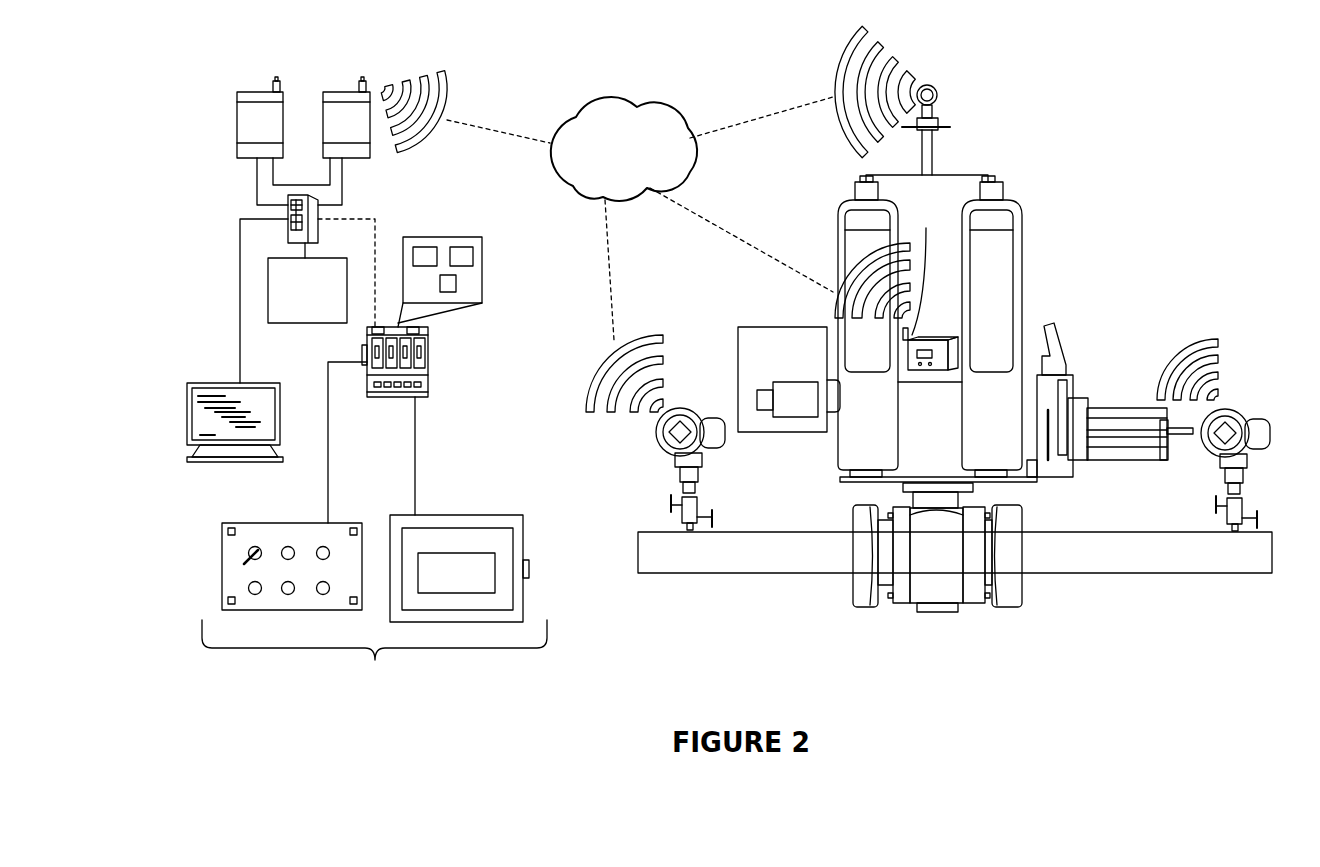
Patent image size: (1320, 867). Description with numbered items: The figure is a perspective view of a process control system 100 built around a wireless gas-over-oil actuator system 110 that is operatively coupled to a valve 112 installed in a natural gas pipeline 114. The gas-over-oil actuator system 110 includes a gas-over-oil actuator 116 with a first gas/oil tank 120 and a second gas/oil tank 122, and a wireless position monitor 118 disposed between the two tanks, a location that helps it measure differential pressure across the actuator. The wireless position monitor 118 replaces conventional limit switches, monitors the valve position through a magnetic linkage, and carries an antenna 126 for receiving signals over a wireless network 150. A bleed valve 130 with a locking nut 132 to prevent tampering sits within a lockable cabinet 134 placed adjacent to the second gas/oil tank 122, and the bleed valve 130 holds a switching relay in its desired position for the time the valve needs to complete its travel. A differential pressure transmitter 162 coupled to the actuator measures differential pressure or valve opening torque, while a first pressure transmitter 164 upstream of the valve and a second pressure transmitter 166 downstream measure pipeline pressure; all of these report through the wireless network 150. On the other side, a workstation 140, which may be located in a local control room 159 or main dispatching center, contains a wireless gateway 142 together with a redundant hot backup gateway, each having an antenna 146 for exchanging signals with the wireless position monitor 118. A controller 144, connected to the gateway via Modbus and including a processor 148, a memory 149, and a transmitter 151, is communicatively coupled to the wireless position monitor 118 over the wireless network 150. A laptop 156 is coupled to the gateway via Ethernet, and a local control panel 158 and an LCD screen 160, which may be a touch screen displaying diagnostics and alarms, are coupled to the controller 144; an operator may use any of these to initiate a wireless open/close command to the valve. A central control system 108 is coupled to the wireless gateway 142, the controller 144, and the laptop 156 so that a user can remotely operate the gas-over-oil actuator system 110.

The process control system 100 is at (686, 44).
The central control system 108 is at (300, 324).
The gas-over-oil actuator system 110 is at (1038, 307).
The valve 112 is at (955, 625).
The natural gas pipeline 114 is at (1135, 573).
The gas-over-oil actuator 116 is at (1038, 263).
The wireless position monitor 118 is at (945, 337).
The first gas/oil tank 120 is at (1022, 211).
The second gas/oil tank 122 is at (838, 212).
The antenna 126 is at (922, 269).
The bleed valve 130 is at (798, 417).
The locking nut 132 is at (762, 412).
The lockable cabinet 134 is at (768, 327).
The workstation 140 is at (204, 222).
The wireless gateway 142 is at (238, 107).
The controller 144 is at (430, 353).
The antenna 146 is at (281, 86).
The processor 148 is at (423, 247).
The memory 149 is at (465, 247).
The wireless network 150 is at (640, 157).
The transmitter 151 is at (456, 283).
The laptop 156 is at (269, 383).
The local control panel 158 is at (273, 523).
The local control room 159 is at (374, 657).
The LCD screen 160 is at (483, 515).
The differential pressure transmitter 162 is at (940, 88).
The first pressure transmitter 164 is at (656, 438).
The second pressure transmitter 166 is at (1247, 412).